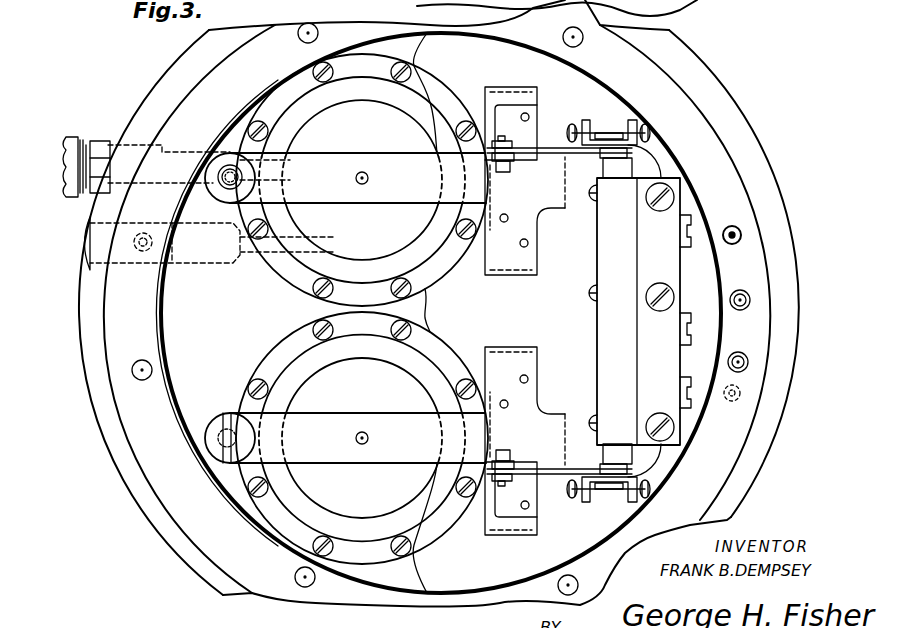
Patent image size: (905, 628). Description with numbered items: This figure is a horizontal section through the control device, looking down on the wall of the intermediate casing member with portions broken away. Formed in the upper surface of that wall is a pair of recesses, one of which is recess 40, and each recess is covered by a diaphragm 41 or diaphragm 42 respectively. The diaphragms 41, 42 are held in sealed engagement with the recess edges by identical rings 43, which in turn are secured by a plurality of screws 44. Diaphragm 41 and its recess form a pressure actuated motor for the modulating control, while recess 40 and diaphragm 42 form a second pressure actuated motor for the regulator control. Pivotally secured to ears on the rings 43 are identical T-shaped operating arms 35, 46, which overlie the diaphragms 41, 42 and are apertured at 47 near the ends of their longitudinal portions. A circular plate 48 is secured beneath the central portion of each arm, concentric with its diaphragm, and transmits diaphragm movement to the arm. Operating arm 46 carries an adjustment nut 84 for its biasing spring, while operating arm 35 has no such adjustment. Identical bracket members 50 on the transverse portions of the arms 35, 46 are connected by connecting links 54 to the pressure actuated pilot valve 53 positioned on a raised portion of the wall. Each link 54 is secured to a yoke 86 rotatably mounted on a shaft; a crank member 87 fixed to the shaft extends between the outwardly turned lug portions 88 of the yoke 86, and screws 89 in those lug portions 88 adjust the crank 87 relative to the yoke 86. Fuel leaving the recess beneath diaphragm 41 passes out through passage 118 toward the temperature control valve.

The passage 118 is at (83, 140).
The diaphragm 41 is at (376, 90).
The screws 44 is at (412, 70).
The recess 40 is at (325, 122).
The operating arm 35 is at (389, 160).
The bracket members 50 is at (530, 128).
The screws 89 is at (573, 121).
The outwardly turned lug portions 88 is at (590, 122).
The crank member 87 is at (609, 133).
The aperture 47 is at (216, 194).
The rings 43 is at (279, 264).
The diaphragm 42 is at (378, 347).
The circular plate 48 is at (332, 380).
The operating arm 46 is at (392, 420).
The adjustment nut 84 is at (218, 412).
The pilot valve 53 is at (591, 345).
The connecting links 54 is at (556, 153).
The yoke 86 is at (626, 479).